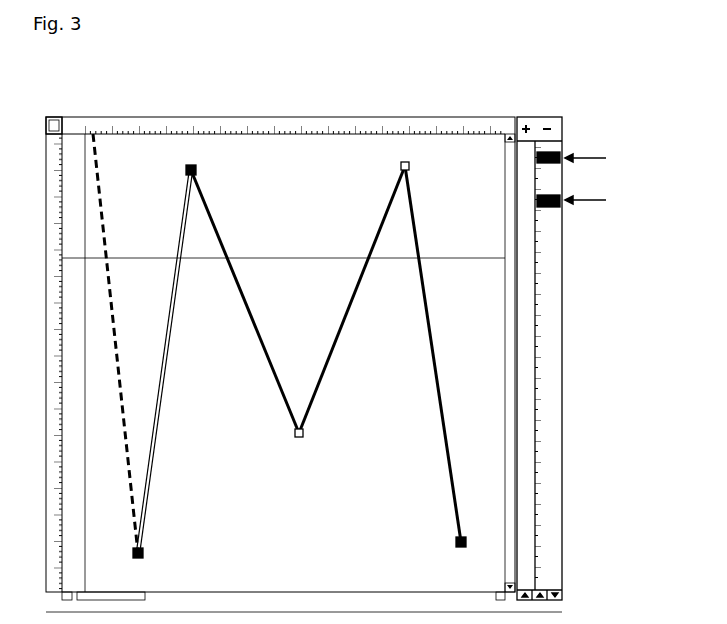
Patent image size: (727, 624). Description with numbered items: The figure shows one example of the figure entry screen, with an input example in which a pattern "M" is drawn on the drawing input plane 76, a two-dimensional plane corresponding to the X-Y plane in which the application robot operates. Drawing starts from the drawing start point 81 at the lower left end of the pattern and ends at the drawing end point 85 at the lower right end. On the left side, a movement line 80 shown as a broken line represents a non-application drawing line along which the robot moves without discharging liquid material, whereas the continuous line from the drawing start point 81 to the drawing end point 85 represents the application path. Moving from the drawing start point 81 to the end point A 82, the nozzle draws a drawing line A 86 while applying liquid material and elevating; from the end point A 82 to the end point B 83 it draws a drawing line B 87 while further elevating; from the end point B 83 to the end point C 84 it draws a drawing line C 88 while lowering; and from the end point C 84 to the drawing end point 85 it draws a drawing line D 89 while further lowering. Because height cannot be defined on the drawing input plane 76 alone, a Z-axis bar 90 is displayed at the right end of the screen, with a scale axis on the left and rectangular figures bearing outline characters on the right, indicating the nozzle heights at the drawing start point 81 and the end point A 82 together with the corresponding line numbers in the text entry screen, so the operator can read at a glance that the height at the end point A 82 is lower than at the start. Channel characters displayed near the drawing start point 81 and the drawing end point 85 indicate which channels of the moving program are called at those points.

The drawing input plane 76 is at (301, 148).
The movement line 80 is at (98, 162).
The drawing start point 81 is at (133, 554).
The end point A 82 is at (197, 172).
The end point B 83 is at (303, 436).
The end point C 84 is at (410, 167).
The drawing end point 85 is at (455, 543).
The drawing line A 86 is at (162, 413).
The drawing line B 87 is at (260, 348).
The drawing line C 88 is at (343, 330).
The drawing line D 89 is at (430, 320).
The Z-axis bar 90 is at (562, 113).